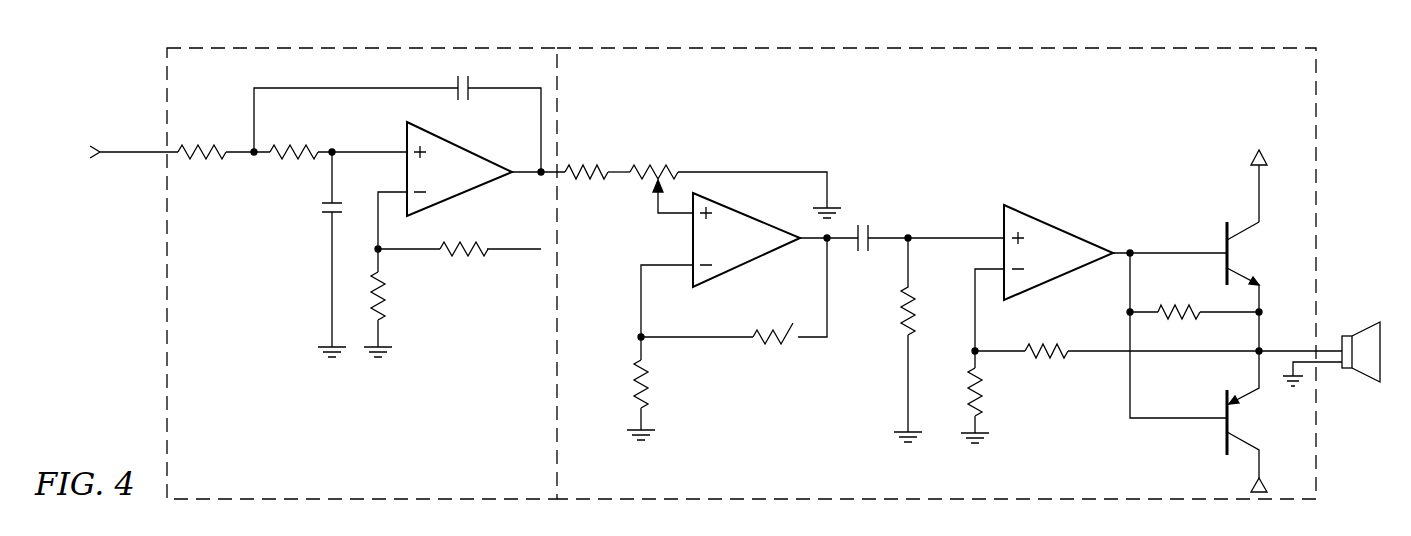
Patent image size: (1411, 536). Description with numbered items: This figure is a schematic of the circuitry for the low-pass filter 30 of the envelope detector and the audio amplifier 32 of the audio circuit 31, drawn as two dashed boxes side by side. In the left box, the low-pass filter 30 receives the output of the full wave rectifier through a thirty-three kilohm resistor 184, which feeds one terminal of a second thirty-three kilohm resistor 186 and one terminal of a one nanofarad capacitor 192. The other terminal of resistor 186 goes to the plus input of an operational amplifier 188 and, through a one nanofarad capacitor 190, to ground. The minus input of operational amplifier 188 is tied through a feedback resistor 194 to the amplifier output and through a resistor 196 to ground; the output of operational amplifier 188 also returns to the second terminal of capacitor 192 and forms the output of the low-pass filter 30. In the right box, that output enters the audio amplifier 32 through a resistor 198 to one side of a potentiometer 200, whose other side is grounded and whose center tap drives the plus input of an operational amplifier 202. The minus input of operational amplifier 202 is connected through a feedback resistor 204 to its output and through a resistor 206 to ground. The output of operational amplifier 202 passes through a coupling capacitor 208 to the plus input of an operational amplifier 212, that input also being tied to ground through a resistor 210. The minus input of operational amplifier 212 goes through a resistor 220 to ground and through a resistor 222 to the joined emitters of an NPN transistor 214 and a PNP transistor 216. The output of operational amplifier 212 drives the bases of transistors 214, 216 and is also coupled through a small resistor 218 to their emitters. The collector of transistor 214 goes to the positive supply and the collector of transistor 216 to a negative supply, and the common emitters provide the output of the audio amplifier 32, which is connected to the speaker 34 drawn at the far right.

The low-pass filter 30 is at (192, 357).
The audio circuit 31 is at (1316, 48).
The audio amplifier 32 is at (1296, 141).
The speaker 34 is at (1363, 329).
The resistor 184 is at (205, 145).
The resistor 186 is at (297, 145).
The operational amplifier 188 is at (466, 151).
The capacitor 190 is at (328, 210).
The capacitor 192 is at (472, 85).
The resistor 194 is at (470, 248).
The resistor 196 is at (383, 293).
The resistor 198 is at (590, 168).
The potentiometer 200 is at (660, 165).
The operational amplifier 202 is at (760, 268).
The resistor 204 is at (783, 345).
The resistor 206 is at (648, 385).
The capacitor 208 is at (877, 252).
The resistor 210 is at (902, 320).
The operational amplifier 212 is at (1063, 229).
The NPN transistor 214 is at (1232, 265).
The PNP transistor 216 is at (1232, 423).
The resistor 218 is at (1190, 308).
The resistor 220 is at (985, 390).
The resistor 222 is at (1050, 348).